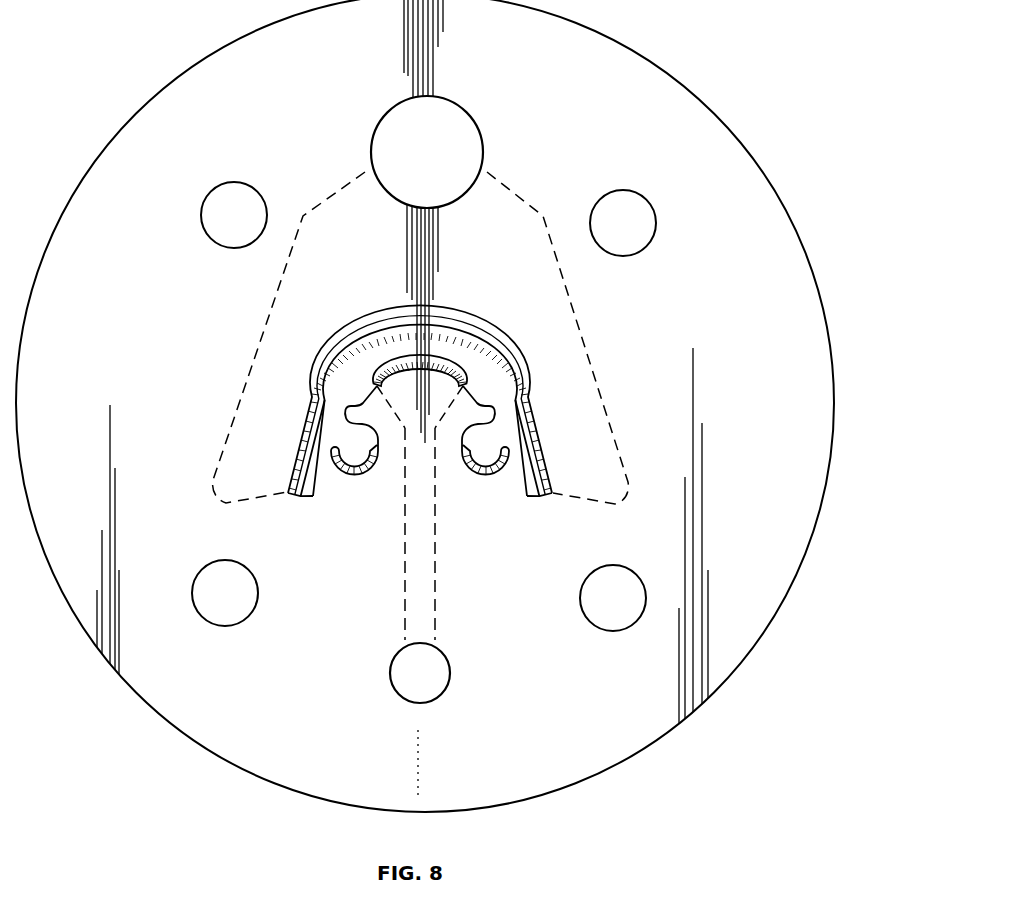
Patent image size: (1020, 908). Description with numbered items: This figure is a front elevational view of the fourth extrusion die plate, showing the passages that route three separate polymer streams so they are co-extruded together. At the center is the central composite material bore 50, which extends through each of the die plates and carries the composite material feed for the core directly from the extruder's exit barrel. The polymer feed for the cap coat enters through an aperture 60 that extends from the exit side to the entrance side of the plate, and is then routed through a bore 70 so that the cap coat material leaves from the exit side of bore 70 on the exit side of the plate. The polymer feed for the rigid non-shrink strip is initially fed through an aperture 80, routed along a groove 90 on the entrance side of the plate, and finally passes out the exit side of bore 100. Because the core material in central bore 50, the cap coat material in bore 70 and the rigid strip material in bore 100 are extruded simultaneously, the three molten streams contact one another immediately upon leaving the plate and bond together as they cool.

The central composite material bore 50 is at (517, 437).
The aperture 60 is at (462, 133).
The bore 70 is at (518, 387).
The aperture 80 is at (437, 688).
The groove 90 is at (431, 593).
The bore 100 is at (462, 370).